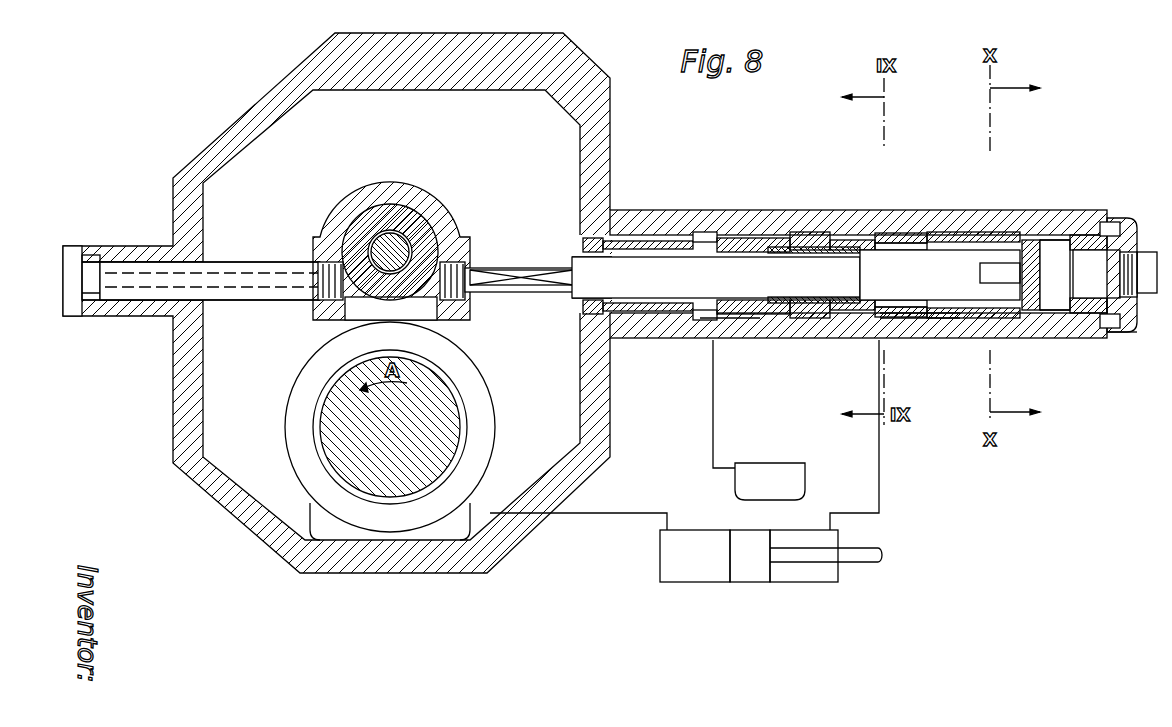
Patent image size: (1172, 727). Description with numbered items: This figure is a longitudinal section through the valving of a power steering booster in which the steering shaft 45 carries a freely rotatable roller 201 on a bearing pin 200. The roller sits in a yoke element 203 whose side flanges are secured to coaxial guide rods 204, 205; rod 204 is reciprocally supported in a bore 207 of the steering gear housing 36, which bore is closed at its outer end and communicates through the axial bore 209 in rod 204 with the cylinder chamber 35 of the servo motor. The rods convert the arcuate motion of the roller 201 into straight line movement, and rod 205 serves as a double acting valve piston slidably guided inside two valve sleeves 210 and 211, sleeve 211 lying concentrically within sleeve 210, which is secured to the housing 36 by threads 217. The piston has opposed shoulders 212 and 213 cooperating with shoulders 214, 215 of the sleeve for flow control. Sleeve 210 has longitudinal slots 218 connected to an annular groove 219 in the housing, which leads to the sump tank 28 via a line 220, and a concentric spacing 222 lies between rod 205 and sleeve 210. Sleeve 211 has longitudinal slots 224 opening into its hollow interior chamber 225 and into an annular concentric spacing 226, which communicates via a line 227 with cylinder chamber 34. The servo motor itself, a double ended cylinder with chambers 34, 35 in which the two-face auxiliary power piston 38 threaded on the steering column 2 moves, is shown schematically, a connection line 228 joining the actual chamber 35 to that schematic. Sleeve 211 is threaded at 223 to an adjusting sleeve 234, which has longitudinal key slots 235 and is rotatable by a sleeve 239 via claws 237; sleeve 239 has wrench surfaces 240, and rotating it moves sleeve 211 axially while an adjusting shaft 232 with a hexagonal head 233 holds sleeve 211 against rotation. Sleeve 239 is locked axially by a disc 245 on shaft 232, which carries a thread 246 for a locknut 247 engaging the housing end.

The steering column 2 is at (860, 553).
The sump tank 28 is at (778, 470).
The cylinder chamber 34 is at (800, 574).
The cylinder chamber 35 is at (260, 485).
The steering gear housing 36 is at (495, 553).
The auxiliary power piston 38 is at (757, 574).
The steering shaft 45 is at (452, 428).
The bearing pin 200 is at (413, 257).
The roller 201 is at (420, 238).
The yoke element 203 is at (430, 195).
The guide rod 204 is at (237, 263).
The guide rod 205 is at (515, 284).
The bore 207 is at (132, 293).
The axial bore 209 is at (270, 282).
The valve sleeve 210 is at (580, 243).
The valve sleeve 211 is at (777, 256).
The shoulder 212 is at (572, 299).
The shoulder 213 is at (782, 310).
The shoulder 214 is at (612, 240).
The shoulder 215 is at (755, 318).
The threads 217 is at (813, 232).
The longitudinal slots 218 is at (645, 242).
The annular groove 219 is at (703, 318).
The line 220 is at (712, 415).
The concentric spacing 222 is at (722, 246).
The threads 223 is at (1029, 258).
The longitudinal slots 224 is at (907, 250).
The hollow interior chamber 225 is at (963, 262).
The annular concentric spacing 226 is at (897, 320).
The line 227 is at (880, 465).
The connection line 228 is at (652, 512).
The adjusting shaft 232 is at (1083, 314).
The hexagonal head 233 is at (1147, 262).
The adjusting sleeve 234 is at (1007, 232).
The longitudinal key slots 235 is at (857, 238).
The claws 237 is at (1058, 316).
The sleeve 239 is at (1104, 316).
The wrench surfaces 240 is at (1083, 306).
The disc 245 is at (1113, 233).
The thread 246 is at (1133, 334).
The locknut 247 is at (1132, 216).